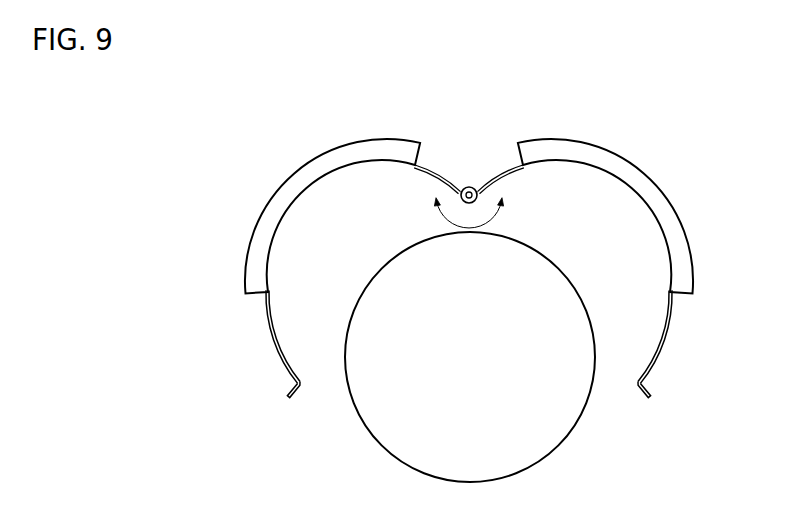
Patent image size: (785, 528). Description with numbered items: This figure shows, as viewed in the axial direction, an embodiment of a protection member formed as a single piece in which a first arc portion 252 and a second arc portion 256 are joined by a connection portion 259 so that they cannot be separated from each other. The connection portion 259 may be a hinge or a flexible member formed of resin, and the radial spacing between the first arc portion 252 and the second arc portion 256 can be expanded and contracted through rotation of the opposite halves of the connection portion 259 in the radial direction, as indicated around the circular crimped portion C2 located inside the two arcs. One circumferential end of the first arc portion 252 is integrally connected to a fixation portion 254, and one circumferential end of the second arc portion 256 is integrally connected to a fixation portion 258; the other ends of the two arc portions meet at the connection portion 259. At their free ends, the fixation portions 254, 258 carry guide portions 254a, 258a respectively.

The first arc portion 252 is at (280, 187).
The fixation portion 254 is at (273, 342).
The guide portion 254a is at (298, 396).
The second arc portion 256 is at (668, 198).
The fixation portion 258 is at (661, 350).
The guide portion 258a is at (637, 392).
The connection portion 259 is at (468, 187).
The crimped portion C2 is at (542, 461).